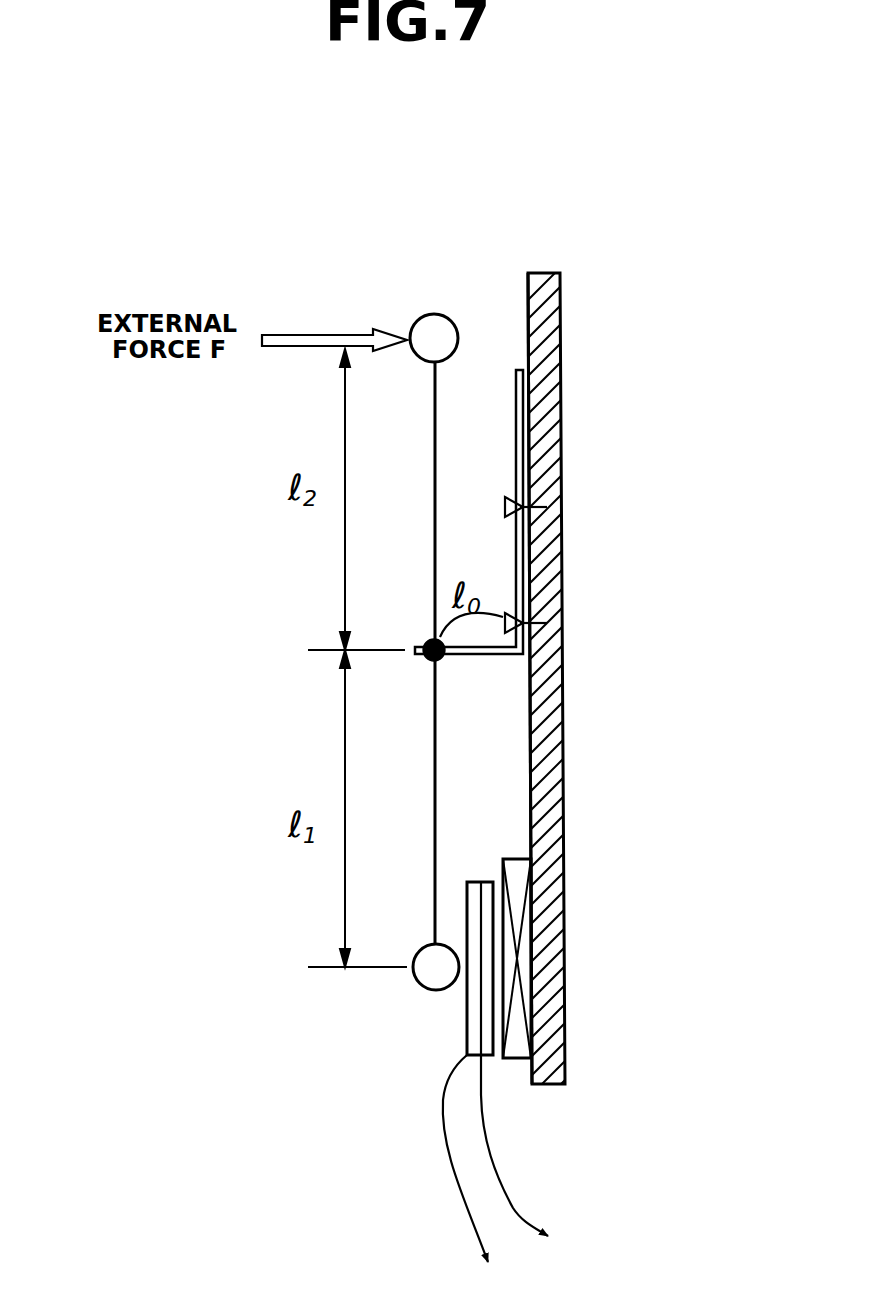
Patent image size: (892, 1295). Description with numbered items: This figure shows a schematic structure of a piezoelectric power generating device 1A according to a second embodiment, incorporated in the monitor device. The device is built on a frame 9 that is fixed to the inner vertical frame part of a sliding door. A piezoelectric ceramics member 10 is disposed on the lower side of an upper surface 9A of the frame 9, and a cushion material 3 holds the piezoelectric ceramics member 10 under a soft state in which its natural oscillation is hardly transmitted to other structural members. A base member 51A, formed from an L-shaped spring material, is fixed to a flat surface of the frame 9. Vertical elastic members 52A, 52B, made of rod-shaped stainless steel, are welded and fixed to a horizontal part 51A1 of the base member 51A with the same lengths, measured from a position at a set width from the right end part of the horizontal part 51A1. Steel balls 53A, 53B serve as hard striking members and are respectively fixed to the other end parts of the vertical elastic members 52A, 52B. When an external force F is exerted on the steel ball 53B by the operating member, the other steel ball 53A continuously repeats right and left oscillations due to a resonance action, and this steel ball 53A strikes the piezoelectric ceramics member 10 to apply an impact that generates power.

The piezoelectric power generating device 1A is at (332, 278).
The frame 9 is at (547, 273).
The upper surface of the frame 9A is at (527, 307).
The steel ball 53B is at (417, 317).
The vertical elastic member 52B is at (433, 503).
The vertical elastic member 52A is at (433, 825).
The steel ball 53A is at (420, 983).
The base member 51A is at (515, 450).
The horizontal part of the base member 51A1 is at (428, 641).
The piezoelectric ceramics member 10 is at (465, 1028).
The cushion material 3 is at (527, 980).